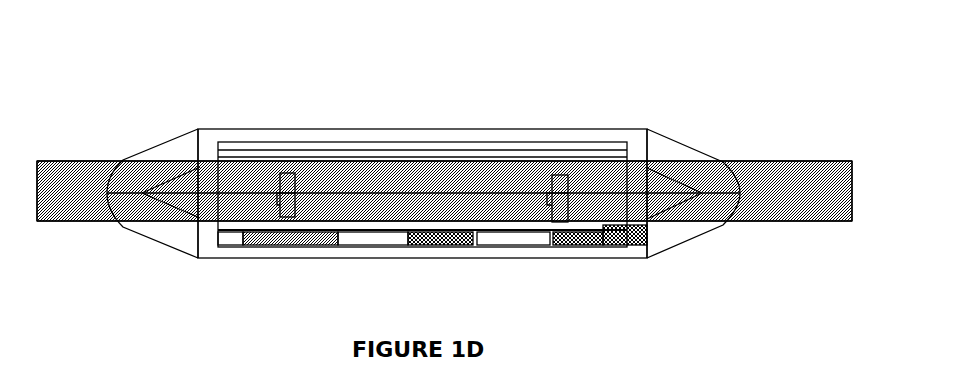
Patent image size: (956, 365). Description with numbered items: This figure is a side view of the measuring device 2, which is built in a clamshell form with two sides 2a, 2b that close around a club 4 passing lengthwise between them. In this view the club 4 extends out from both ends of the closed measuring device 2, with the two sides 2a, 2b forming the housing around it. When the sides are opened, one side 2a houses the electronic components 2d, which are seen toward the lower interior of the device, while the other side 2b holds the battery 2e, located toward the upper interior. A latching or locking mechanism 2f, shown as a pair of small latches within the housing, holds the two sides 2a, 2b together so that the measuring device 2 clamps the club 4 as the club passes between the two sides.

The measuring device 2 is at (180, 57).
The club 4 is at (75, 160).
The first side 2a is at (238, 252).
The second side 2b is at (327, 127).
The electronic components 2d is at (350, 233).
The battery 2e is at (468, 142).
The latching or locking mechanism 2f is at (272, 163).